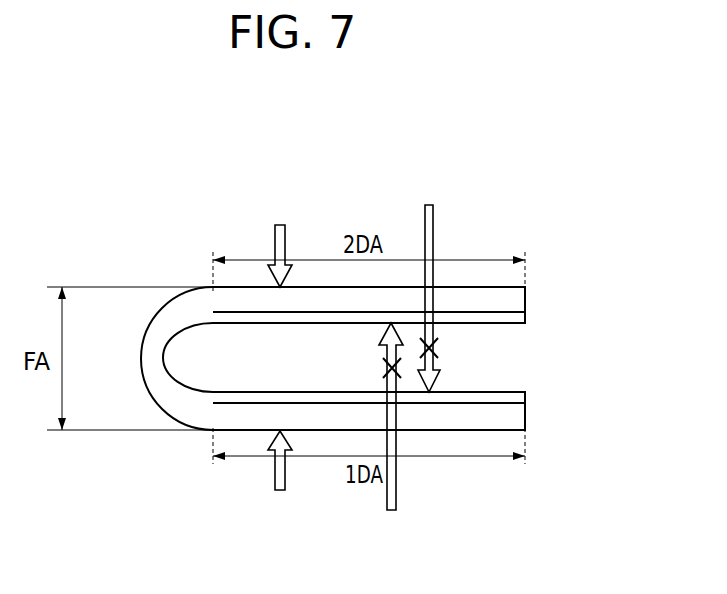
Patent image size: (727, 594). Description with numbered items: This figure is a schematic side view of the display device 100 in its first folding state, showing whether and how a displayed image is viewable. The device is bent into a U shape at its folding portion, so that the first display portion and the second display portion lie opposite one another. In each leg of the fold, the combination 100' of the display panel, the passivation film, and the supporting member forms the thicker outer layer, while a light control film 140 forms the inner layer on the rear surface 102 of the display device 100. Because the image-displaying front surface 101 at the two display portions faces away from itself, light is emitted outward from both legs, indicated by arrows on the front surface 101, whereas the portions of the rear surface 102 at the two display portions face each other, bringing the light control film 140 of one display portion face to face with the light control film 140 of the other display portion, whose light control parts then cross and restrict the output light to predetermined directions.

The display device 100 is at (333, 281).
The combination of display panel, passivation film, and supporting member 100' is at (403, 360).
The light control film 140 is at (513, 318).
The front surface 101 is at (438, 286).
The rear surface 102 is at (360, 391).